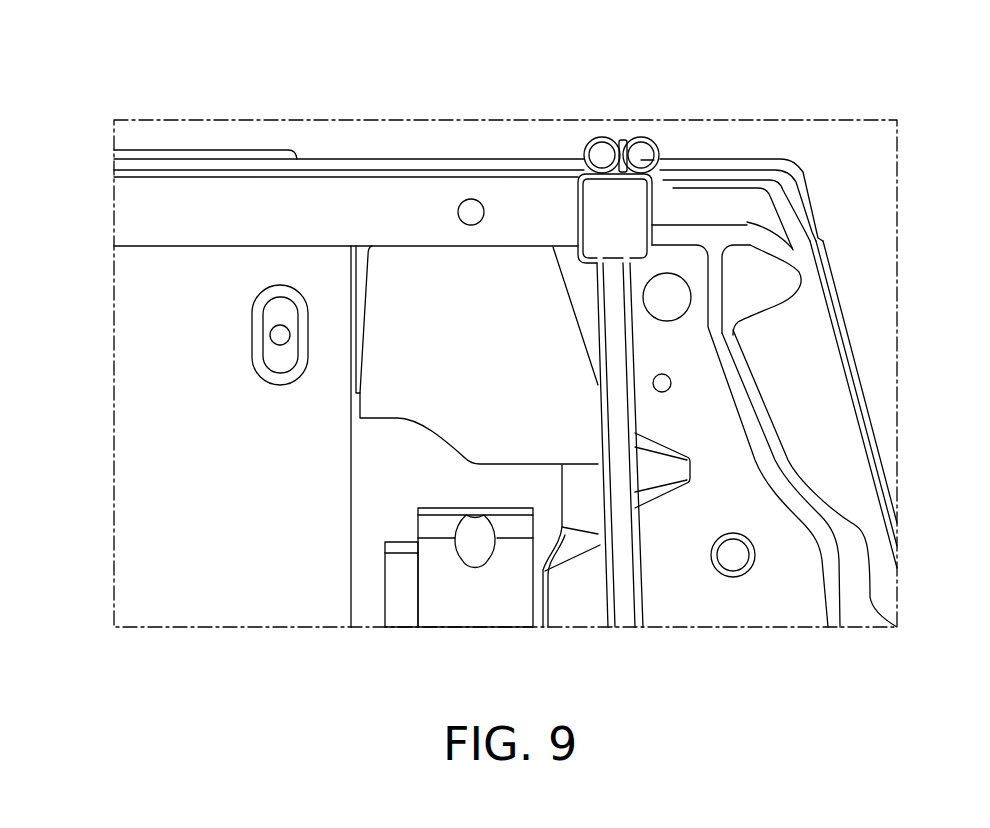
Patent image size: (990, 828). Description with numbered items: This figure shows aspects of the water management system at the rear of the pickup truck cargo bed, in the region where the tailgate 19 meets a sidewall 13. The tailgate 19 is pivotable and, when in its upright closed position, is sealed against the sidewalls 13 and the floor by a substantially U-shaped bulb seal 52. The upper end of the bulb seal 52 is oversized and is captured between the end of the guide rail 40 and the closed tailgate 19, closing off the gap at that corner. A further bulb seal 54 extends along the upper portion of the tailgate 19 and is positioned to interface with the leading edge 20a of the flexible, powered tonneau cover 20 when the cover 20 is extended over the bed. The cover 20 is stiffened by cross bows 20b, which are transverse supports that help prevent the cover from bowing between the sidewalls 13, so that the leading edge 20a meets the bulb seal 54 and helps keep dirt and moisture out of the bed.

The sidewall 13 is at (212, 478).
The tailgate 19 is at (862, 372).
The tonneau cover 20 is at (388, 170).
The leading edge 20a is at (602, 138).
The cross bow 20b is at (641, 155).
The guide rail 40 is at (114, 152).
The bulb seal 52 is at (620, 405).
The bulb seal 54 is at (652, 140).